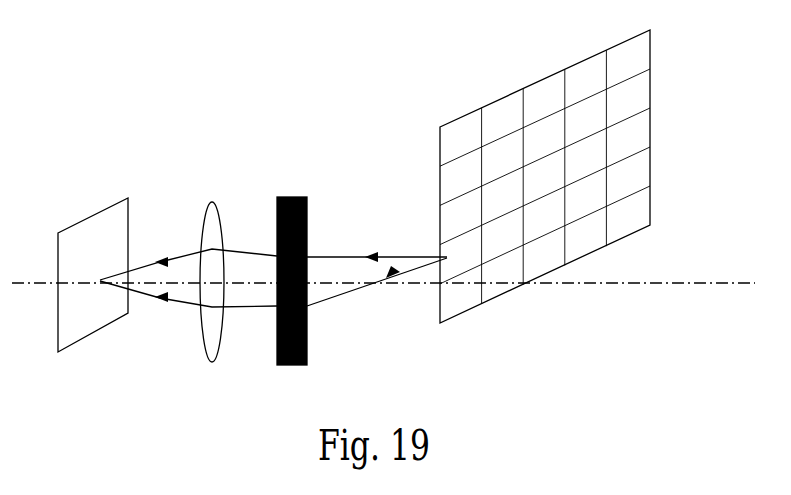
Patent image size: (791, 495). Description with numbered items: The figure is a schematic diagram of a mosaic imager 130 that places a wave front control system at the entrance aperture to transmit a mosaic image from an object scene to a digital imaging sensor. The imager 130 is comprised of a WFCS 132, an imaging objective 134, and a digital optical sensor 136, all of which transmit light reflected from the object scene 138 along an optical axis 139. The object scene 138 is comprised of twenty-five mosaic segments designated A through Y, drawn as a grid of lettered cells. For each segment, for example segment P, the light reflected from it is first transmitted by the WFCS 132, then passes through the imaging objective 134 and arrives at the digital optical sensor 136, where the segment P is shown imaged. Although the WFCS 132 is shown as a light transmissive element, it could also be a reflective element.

The imager 130 is at (207, 108).
The WFCS 132 is at (290, 197).
The imaging objective 134 is at (211, 203).
The digital optical sensor 136 is at (85, 222).
The object scene 138 is at (650, 83).
The optical axis 139 is at (709, 281).